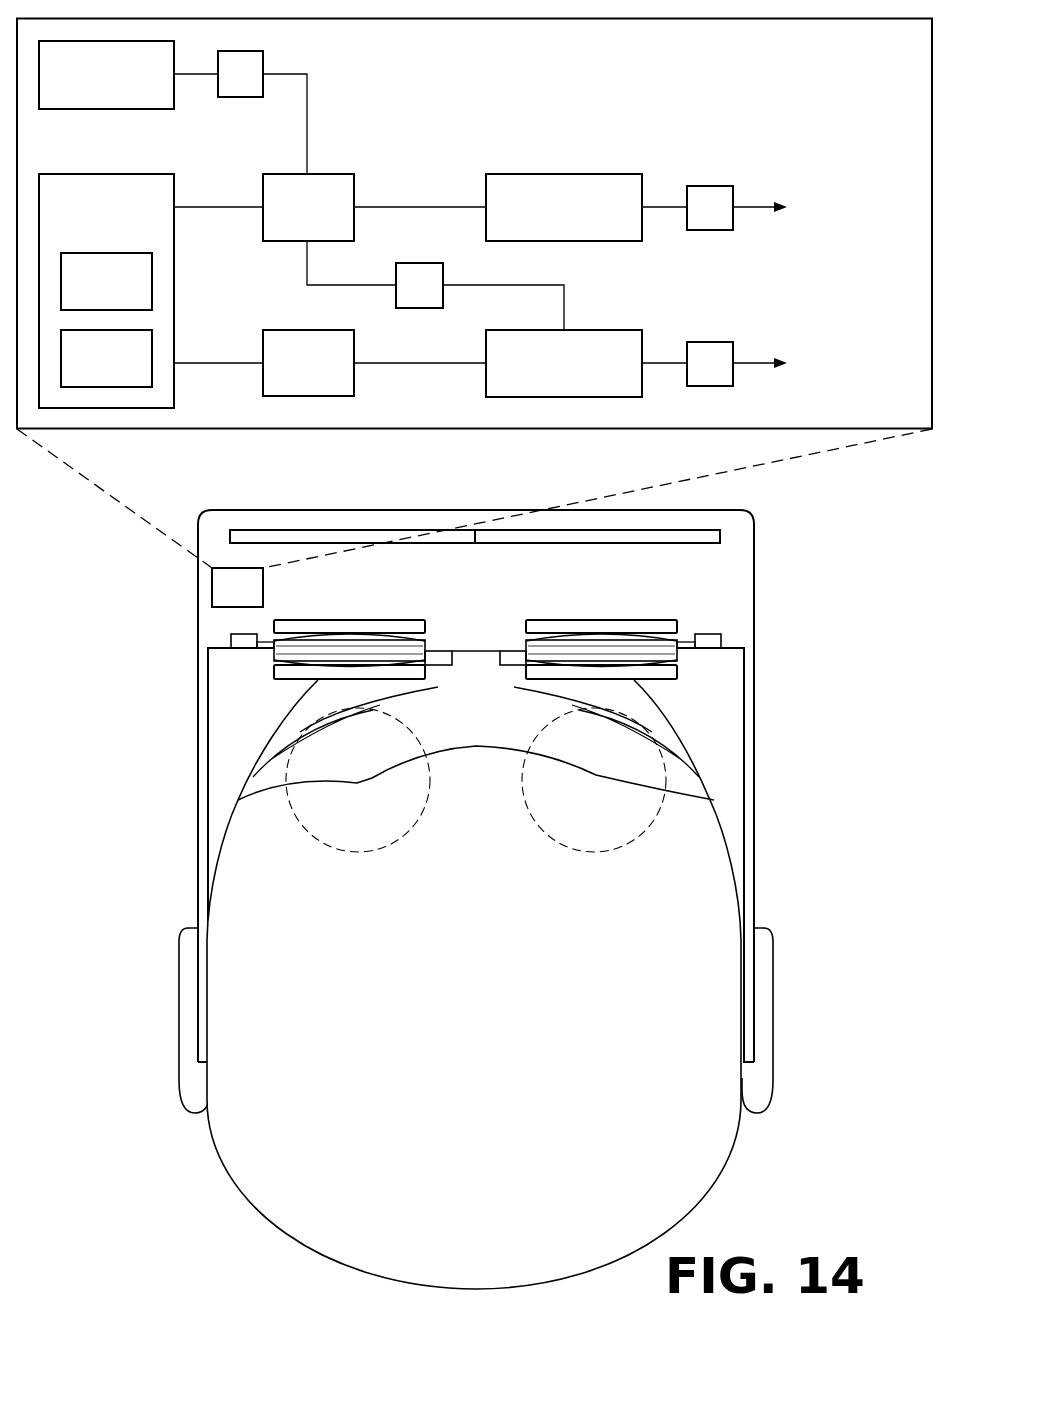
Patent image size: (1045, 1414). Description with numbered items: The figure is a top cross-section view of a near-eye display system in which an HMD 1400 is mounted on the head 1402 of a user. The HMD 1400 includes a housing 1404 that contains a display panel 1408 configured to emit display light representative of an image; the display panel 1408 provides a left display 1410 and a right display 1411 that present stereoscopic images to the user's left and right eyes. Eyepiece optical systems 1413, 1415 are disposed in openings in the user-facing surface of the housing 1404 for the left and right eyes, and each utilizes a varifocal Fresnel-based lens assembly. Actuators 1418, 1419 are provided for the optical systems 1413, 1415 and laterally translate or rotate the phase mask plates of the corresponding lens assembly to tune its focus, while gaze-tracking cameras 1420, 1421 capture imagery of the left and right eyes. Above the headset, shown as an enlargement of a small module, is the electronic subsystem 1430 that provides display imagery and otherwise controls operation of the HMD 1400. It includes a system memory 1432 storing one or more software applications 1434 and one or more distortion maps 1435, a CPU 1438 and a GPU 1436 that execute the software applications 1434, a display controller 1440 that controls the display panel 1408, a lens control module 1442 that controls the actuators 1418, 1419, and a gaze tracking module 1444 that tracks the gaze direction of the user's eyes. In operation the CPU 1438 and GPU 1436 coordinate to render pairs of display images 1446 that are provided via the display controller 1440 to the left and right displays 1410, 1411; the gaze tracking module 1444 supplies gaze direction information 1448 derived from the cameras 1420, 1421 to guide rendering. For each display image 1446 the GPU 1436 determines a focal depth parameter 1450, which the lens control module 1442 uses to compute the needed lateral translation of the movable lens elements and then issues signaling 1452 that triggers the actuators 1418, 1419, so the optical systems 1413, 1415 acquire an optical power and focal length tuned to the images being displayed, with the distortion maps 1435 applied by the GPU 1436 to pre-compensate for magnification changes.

The HMD 1400 is at (170, 1204).
The head 1402 is at (450, 1036).
The housing 1404 is at (398, 504).
The display panel 1408 is at (484, 534).
The left display 1410 is at (297, 533).
The right display 1411 is at (699, 542).
The eyepiece optical system 1413 is at (377, 609).
The eyepiece optical system 1415 is at (633, 608).
The actuator 1418 is at (251, 650).
The actuator 1419 is at (703, 650).
The gaze-tracking camera 1420 is at (440, 650).
The gaze-tracking camera 1421 is at (510, 650).
The electronic subsystem 1430 is at (596, 78).
The system memory 1432 is at (81, 238).
The software application 1434 is at (81, 291).
The distortion map 1435 is at (81, 368).
The graphics processing unit 1436 is at (285, 173).
The central processing unit 1438 is at (285, 329).
The display controller 1440 is at (564, 173).
The lens control module 1442 is at (584, 329).
The gaze tracking module 1444 is at (108, 110).
The display image 1446 is at (710, 185).
The gaze direction information 1448 is at (270, 61).
The focal depth parameter 1450 is at (395, 272).
The signaling 1452 is at (710, 341).